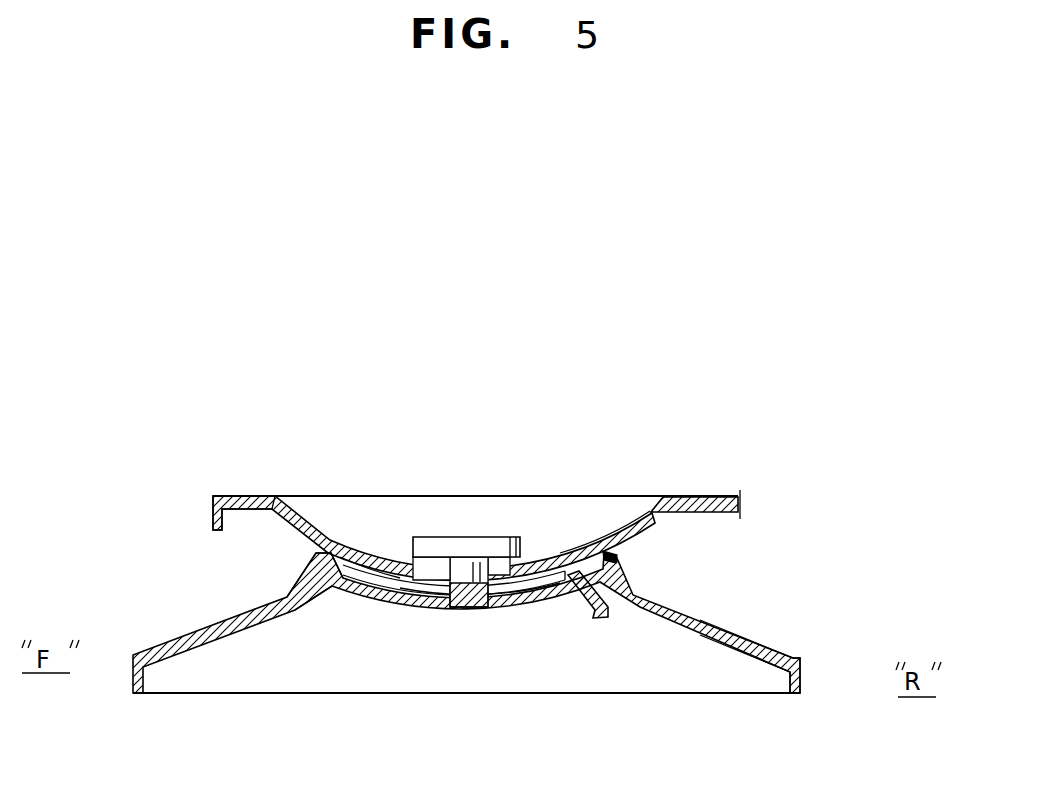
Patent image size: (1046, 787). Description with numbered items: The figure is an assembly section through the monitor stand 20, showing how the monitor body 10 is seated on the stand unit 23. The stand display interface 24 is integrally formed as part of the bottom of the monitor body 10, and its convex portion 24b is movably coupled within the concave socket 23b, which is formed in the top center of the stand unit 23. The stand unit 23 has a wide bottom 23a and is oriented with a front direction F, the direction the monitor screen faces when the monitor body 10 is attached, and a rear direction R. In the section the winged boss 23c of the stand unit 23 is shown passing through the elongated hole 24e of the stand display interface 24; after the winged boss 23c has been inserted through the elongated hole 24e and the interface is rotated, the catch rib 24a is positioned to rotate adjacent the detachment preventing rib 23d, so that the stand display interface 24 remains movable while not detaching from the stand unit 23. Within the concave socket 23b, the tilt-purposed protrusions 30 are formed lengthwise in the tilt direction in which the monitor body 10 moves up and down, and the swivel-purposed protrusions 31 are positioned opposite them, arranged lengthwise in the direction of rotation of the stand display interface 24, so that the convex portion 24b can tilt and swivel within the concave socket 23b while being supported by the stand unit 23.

The monitor body 10 is at (708, 505).
The monitor stand 20 is at (200, 484).
The stand unit 23 is at (176, 702).
The wide bottom 23a is at (797, 660).
The concave socket 23b is at (333, 584).
The winged boss 23c is at (428, 537).
The detachment preventing rib 23d is at (552, 582).
The stand display interface 24 is at (662, 538).
The catch rib 24a is at (600, 617).
The convex portion 24b is at (287, 517).
The elongated hole 24e is at (497, 558).
The tilt-purposed protrusions 30 is at (318, 550).
The swivel-purposed protrusions 31 is at (605, 552).